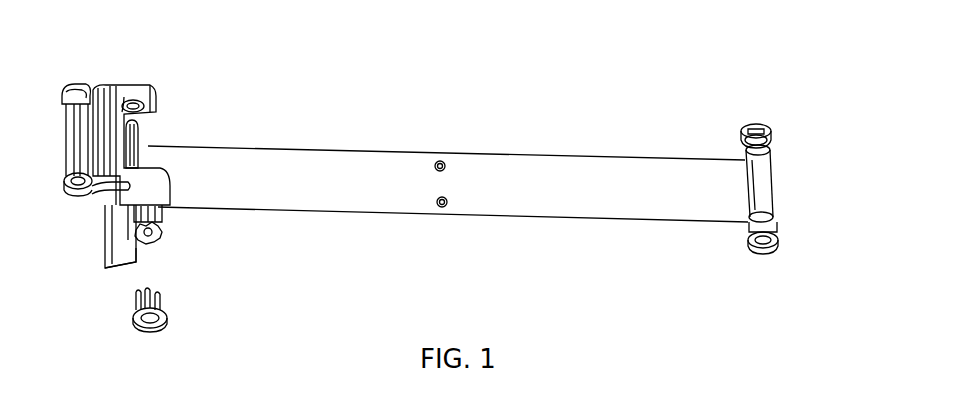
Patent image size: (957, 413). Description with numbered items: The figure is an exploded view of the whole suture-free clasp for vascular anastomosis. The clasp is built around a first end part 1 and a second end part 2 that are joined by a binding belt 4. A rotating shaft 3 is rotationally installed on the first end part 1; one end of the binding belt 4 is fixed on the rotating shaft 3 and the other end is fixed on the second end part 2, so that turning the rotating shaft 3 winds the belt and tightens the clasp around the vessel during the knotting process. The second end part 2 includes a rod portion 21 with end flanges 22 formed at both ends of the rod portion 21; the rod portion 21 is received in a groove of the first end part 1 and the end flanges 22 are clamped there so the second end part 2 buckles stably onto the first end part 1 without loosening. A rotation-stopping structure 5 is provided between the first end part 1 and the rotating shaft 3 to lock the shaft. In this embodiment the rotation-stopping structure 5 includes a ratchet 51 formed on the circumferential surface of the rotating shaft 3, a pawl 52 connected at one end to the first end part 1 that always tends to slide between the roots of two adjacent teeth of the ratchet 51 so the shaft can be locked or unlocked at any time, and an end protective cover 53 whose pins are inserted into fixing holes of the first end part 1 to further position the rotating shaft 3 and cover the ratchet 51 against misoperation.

The first end part 1 is at (117, 88).
The second end part 2 is at (805, 167).
The rotating shaft 3 is at (142, 152).
The binding belt 4 is at (472, 164).
The rotation-stopping structure 5 is at (208, 269).
The rod portion 21 is at (768, 178).
The end flange 22 is at (764, 132).
The ratchet 51 is at (172, 224).
The pawl 52 is at (137, 254).
The end protective cover 53 is at (180, 316).